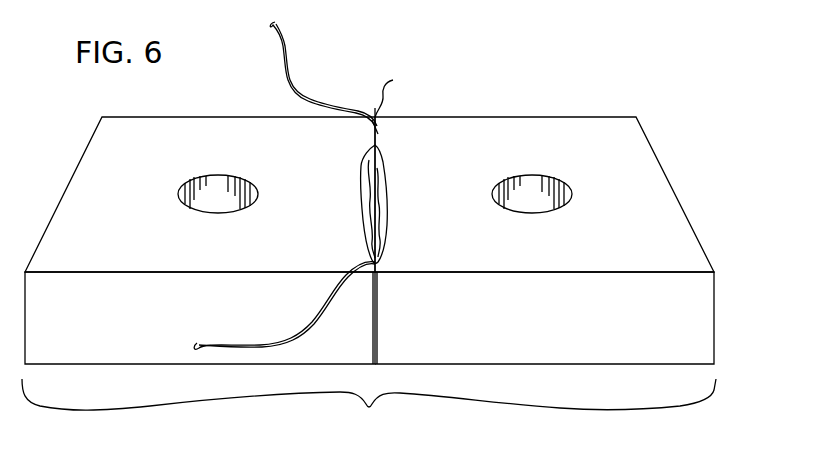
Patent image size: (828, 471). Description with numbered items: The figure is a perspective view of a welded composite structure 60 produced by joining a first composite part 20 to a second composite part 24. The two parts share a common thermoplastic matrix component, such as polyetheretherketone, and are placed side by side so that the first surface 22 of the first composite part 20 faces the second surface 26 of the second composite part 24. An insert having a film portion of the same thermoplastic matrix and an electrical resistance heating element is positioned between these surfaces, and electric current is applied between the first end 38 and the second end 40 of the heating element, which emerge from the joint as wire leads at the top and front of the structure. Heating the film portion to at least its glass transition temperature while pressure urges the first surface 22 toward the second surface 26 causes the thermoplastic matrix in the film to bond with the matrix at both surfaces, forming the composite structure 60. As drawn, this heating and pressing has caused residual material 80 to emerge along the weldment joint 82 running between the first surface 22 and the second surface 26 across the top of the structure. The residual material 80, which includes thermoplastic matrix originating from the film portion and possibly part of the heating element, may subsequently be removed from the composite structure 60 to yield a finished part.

The first composite part 20 is at (122, 231).
The second composite part 24 is at (612, 239).
The first surface 22 is at (378, 268).
The second surface 26 is at (378, 134).
The first end 38 is at (284, 80).
The second end 40 is at (290, 334).
The composite structure 60 is at (369, 407).
The residual material 80 is at (365, 190).
The weldment joint 82 is at (396, 95).